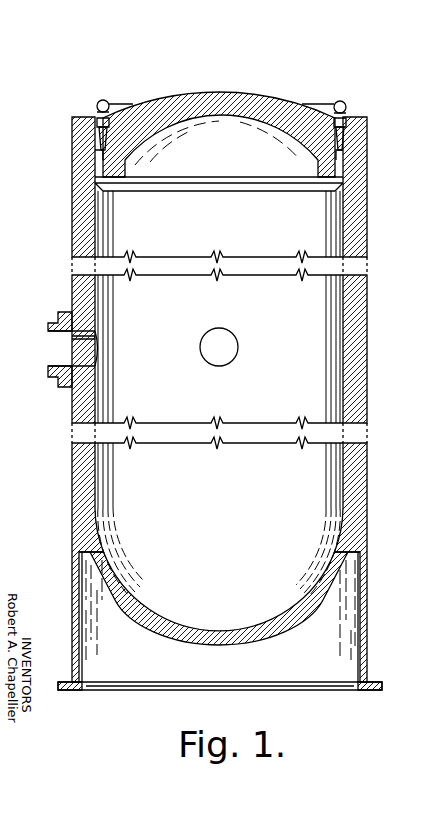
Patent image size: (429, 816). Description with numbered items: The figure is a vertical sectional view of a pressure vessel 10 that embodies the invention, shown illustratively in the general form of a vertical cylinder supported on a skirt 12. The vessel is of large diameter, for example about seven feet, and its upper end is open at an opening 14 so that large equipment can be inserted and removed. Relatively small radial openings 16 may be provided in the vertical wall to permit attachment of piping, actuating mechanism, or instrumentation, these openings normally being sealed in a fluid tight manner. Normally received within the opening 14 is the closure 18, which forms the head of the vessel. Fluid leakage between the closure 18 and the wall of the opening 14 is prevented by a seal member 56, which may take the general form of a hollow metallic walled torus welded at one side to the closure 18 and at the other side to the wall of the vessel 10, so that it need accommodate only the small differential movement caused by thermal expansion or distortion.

The pressure vessel 10 is at (370, 338).
The skirt 12 is at (368, 618).
The opening 14 is at (321, 199).
The radial opening 16 is at (62, 368).
The closure 18 is at (245, 92).
The seal member 56 is at (343, 96).